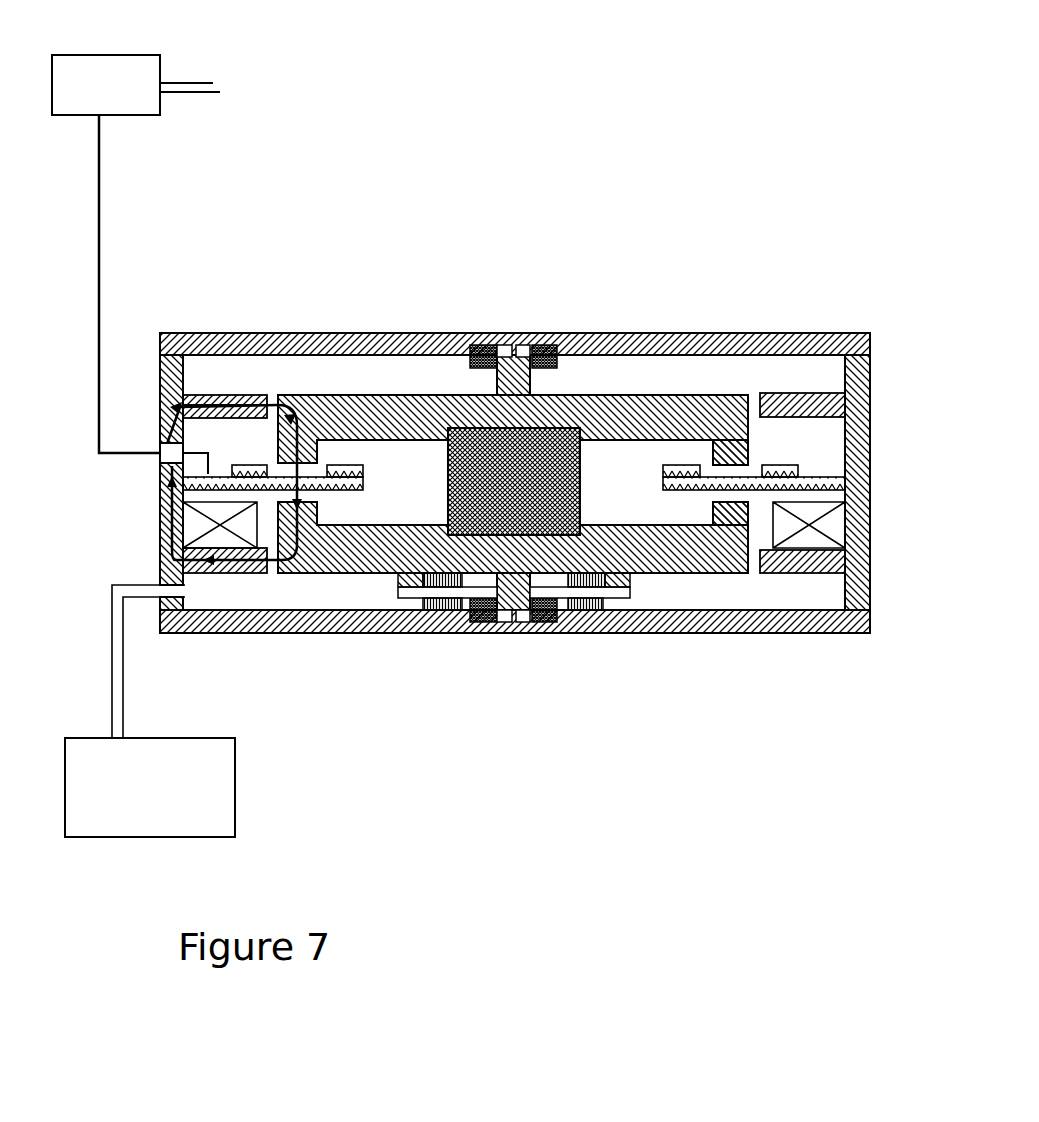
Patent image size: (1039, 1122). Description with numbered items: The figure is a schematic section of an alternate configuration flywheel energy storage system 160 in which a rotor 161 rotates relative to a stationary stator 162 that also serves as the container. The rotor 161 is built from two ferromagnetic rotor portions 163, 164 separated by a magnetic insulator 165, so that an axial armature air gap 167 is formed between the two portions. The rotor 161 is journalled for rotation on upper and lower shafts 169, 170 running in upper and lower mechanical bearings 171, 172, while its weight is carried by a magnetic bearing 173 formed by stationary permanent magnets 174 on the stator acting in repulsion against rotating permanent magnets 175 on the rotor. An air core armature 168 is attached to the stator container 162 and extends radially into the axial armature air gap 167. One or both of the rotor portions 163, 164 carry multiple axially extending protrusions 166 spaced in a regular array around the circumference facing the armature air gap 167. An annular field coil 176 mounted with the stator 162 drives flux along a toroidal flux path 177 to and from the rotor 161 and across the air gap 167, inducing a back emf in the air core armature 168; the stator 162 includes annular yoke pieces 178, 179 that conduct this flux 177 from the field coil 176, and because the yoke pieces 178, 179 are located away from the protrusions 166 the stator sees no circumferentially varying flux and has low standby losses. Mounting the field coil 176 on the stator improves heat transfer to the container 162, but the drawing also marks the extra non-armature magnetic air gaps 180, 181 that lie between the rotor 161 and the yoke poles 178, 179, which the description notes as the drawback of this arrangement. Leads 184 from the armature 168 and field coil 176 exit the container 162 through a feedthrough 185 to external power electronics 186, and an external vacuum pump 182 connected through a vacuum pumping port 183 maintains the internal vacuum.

The flywheel energy storage system 160 is at (333, 50).
The rotor 161 is at (658, 382).
The stator 162 is at (758, 333).
The ferromagnetic rotor portion 163 is at (397, 394).
The ferromagnetic rotor portion 164 is at (337, 577).
The magnetic insulator 165 is at (580, 500).
The axially extending protrusions 166 is at (748, 458).
The axial armature air gap 167 is at (705, 498).
The air core armature 168 is at (820, 477).
The shaft 169 is at (513, 346).
The shaft 170 is at (513, 621).
The upper mechanical bearing 171 is at (541, 346).
The lower mechanical bearing 172 is at (552, 623).
The magnetic bearing 173 is at (612, 595).
The stationary permanent magnets 174 is at (600, 603).
The rotating permanent magnets 175 is at (437, 582).
The annular field coil 176 is at (838, 528).
The toroidal flux path 177 is at (250, 565).
The annular yoke piece 178 is at (829, 575).
The annular yoke piece 179 is at (816, 393).
The upper gap 180 is at (753, 386).
The lower gap 181 is at (757, 579).
The vacuum pump 182 is at (200, 738).
The vacuum pumping port 183 is at (123, 667).
The leads 184 is at (99, 306).
The feedthrough 185 is at (162, 461).
The power electronics 186 is at (123, 123).